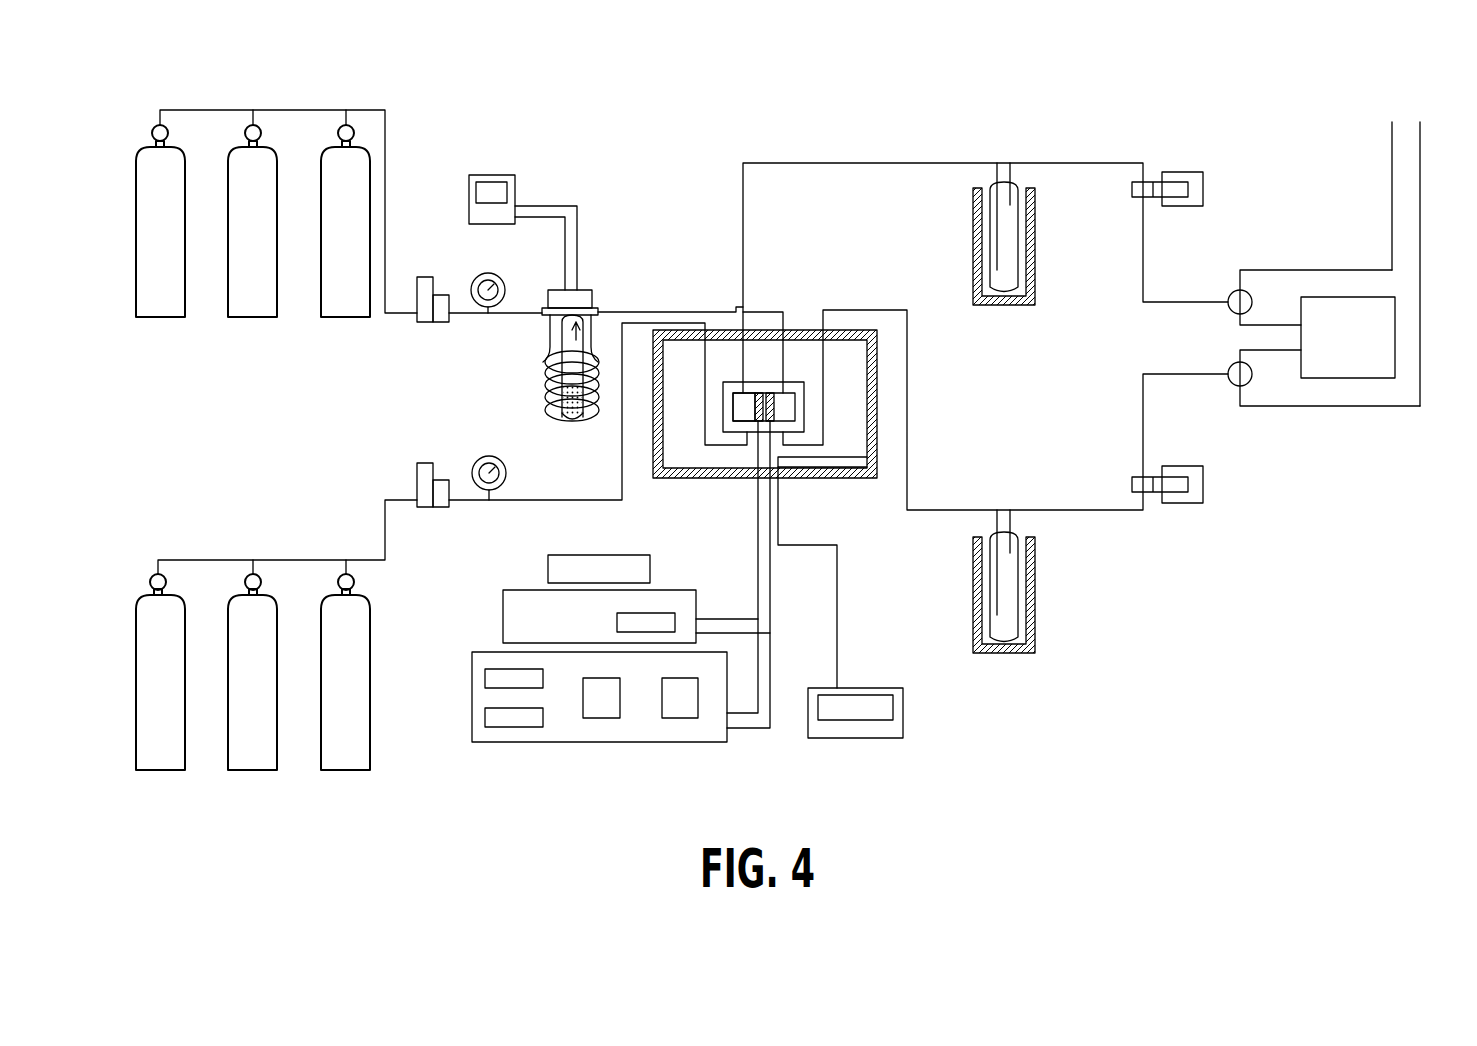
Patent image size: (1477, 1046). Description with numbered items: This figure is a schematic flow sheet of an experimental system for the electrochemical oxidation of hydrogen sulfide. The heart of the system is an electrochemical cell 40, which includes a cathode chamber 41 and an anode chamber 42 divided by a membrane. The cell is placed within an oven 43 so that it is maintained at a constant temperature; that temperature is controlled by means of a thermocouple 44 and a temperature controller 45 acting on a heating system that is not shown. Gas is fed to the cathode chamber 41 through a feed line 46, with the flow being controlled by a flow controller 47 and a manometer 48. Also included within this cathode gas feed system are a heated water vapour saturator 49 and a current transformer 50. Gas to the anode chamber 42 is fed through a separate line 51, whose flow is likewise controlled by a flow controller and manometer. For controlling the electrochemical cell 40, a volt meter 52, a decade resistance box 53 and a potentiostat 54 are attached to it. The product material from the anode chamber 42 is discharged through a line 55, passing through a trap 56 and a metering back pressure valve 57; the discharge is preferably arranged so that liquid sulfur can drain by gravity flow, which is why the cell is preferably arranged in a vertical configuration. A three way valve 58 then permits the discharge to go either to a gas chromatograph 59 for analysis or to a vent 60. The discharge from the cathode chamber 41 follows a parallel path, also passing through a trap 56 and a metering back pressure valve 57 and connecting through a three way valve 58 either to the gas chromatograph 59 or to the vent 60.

The electrochemical cell 40 is at (975, 410).
The cathode chamber 41 is at (870, 416).
The anode chamber 42 is at (651, 435).
The oven 43 is at (777, 444).
The thermocouple 44 is at (892, 569).
The temperature controller 45 is at (905, 730).
The feed line 46 is at (315, 202).
The flow controller 47 is at (431, 334).
The manometer 48 is at (582, 415).
The heated water vapour saturator 49 is at (604, 331).
The current transformer 50 is at (542, 214).
The line 51 is at (304, 635).
The volt meter 52 is at (601, 615).
The decade resistance box 53 is at (619, 539).
The potentiostat 54 is at (621, 616).
The line 55 is at (913, 278).
The trap 56 is at (1047, 408).
The metering back pressure valve 57 is at (1214, 322).
The three way valve 58 is at (1286, 338).
The gas chromatograph 59 is at (1370, 381).
The vent 60 is at (1426, 236).